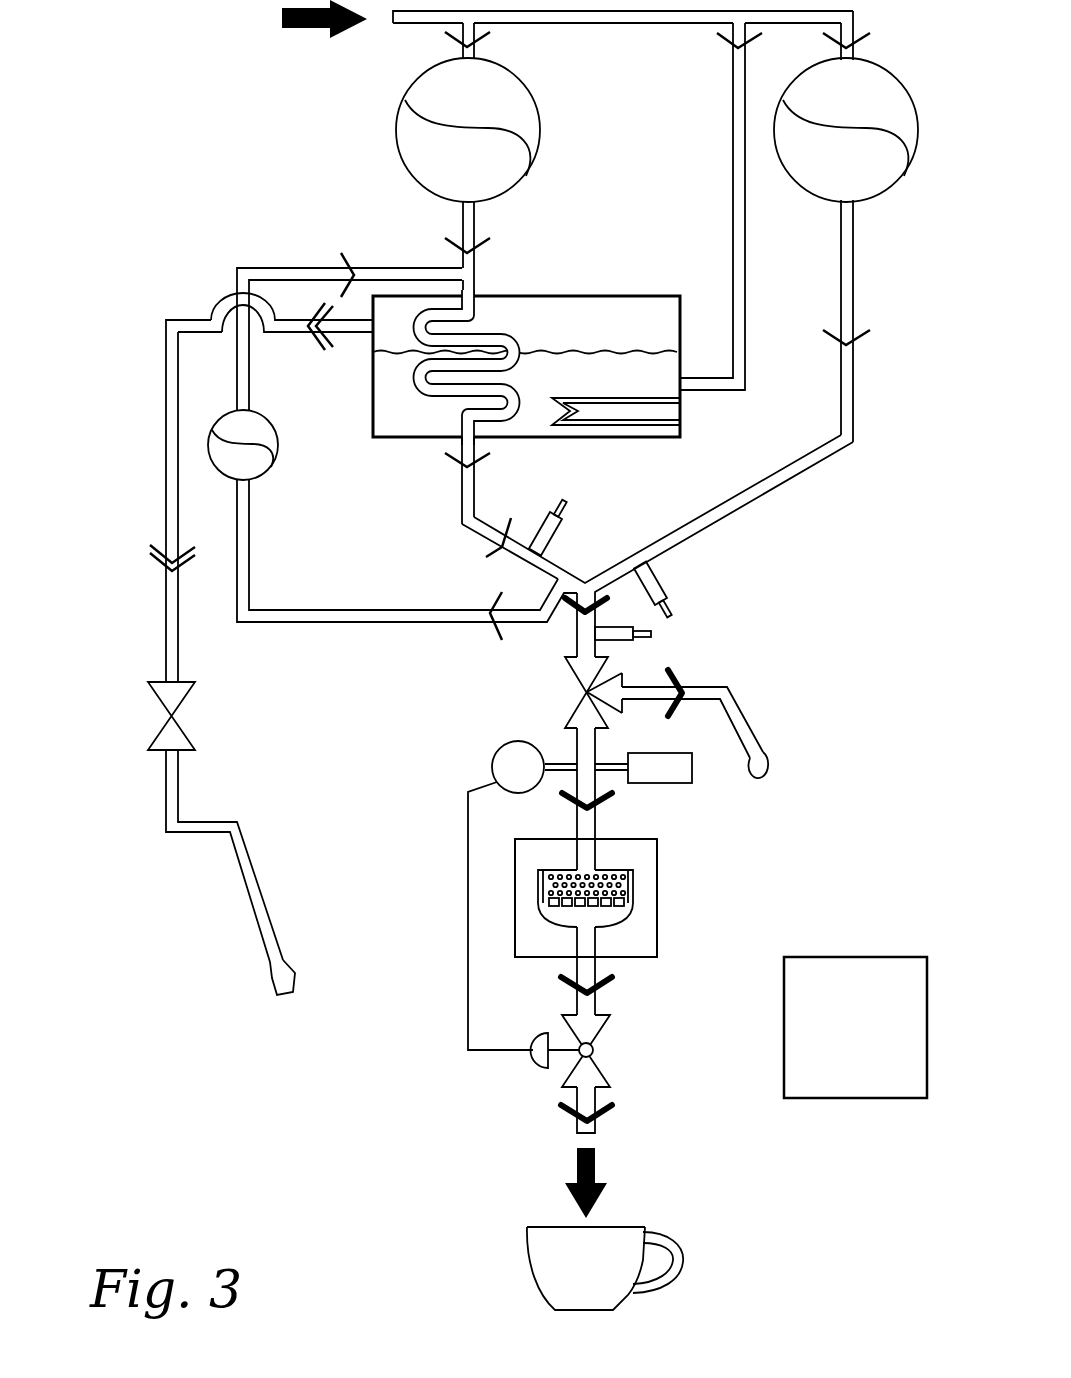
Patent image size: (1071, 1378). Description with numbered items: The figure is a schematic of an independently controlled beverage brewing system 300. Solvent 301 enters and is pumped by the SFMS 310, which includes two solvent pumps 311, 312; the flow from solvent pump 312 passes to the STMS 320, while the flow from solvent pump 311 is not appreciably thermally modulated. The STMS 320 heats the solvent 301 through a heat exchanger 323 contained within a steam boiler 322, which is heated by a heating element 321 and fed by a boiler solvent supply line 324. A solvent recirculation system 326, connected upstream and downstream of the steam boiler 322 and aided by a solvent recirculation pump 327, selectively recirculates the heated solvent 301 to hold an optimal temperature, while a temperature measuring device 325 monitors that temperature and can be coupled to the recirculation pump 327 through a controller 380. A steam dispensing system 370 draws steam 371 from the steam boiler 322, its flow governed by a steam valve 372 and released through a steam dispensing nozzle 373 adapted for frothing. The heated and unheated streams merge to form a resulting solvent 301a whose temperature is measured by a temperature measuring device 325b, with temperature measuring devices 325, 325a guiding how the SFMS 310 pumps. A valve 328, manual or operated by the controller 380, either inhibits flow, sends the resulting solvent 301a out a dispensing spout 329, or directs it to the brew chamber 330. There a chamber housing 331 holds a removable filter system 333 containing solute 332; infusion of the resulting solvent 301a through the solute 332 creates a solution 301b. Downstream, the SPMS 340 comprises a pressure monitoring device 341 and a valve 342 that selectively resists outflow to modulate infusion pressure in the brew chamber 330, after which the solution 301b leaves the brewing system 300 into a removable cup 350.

The beverage brewing system 300 is at (133, 188).
The solvent 301 is at (307, 28).
The resulting solvent 301a is at (570, 607).
The solution 301b is at (600, 987).
The SFMS 310 is at (602, 226).
The solvent pump 311 is at (893, 183).
The solvent pump 312 is at (400, 168).
The STMS 320 is at (567, 273).
The heating element 321 is at (580, 425).
The steam boiler 322 is at (515, 440).
The heat exchanger 323 is at (517, 335).
The boiler solvent supply line 324 is at (733, 277).
The temperature measuring device 325 is at (547, 523).
The temperature measuring device 325a is at (658, 583).
The temperature measuring device 325b is at (620, 640).
The solvent recirculation system 326 is at (392, 496).
The solvent recirculation pump 327 is at (268, 463).
The valve 328 is at (572, 702).
The dispensing spout 329 is at (748, 730).
The brew chamber 330 is at (626, 922).
The chamber housing 331 is at (657, 942).
The solute 332 is at (613, 883).
The filter system 333 is at (570, 902).
The SPMS 340 is at (501, 1005).
The pressure monitoring device 341 is at (493, 757).
The valve 342 is at (560, 1078).
The removable cup 350 is at (714, 1211).
The steam dispensing system 370 is at (209, 644).
The steam 371 is at (160, 563).
The steam valve 372 is at (160, 722).
The steam dispensing nozzle 373 is at (268, 950).
The controller 380 is at (881, 1043).